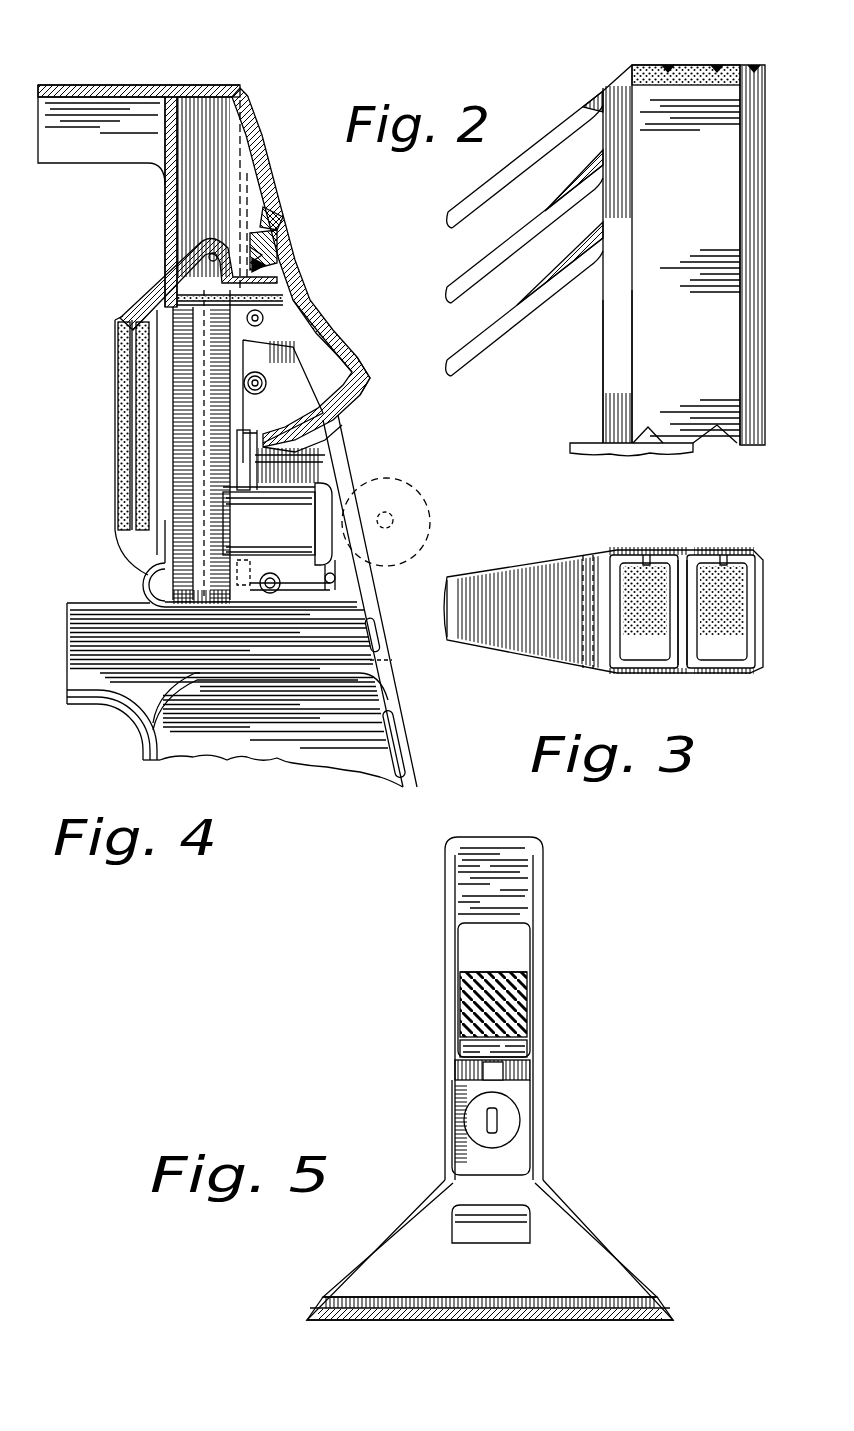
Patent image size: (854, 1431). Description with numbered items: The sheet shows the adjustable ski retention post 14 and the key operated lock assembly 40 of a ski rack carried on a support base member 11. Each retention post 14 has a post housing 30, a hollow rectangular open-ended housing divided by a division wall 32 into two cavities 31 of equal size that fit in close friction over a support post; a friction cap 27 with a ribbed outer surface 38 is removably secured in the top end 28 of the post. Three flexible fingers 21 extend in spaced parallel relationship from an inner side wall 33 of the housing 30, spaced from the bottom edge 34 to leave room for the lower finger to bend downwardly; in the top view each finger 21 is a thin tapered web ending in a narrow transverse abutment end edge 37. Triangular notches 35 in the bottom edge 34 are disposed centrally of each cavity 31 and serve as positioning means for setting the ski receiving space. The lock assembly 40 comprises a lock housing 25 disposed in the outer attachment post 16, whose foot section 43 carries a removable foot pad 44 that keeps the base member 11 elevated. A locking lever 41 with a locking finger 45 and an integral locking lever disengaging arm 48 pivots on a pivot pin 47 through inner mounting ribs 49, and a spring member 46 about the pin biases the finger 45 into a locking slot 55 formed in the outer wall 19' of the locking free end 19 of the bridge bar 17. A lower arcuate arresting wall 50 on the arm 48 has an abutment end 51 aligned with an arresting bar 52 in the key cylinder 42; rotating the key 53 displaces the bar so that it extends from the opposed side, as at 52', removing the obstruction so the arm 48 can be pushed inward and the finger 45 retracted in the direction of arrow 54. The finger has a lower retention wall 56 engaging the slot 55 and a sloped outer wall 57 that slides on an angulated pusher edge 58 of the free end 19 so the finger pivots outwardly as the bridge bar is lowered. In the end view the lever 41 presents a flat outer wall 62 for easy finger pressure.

In FIG. 4, the support base member 11 is at (97, 700).
In FIG. 2, the adjustable ski retention post 14 is at (570, 100).
In FIG. 4, the attachment post 16 is at (193, 513).
In FIG. 4, the bridge bar 17 is at (137, 92).
In FIG. 5, the bridge bar 17 is at (493, 833).
In FIG. 4, the locking free end 19 is at (220, 325).
In FIG. 5, the locking free end 19 is at (490, 1072).
In FIG. 4, the outer wall 19' is at (301, 261).
In FIG. 2, the flexible finger 21 is at (475, 195).
In FIG. 3, the flexible finger 21 is at (510, 590).
In FIG. 4, the lock housing 25 is at (320, 453).
In FIG. 2, the friction cap 27 is at (697, 67).
In FIG. 3, the top end 28 is at (623, 567).
In FIG. 2, the post housing 30 is at (643, 333).
In FIG. 3, the cavity 31 is at (703, 583).
In FIG. 3, the division wall 32 is at (683, 633).
In FIG. 2, the inner side wall 33 is at (603, 290).
In FIG. 2, the bottom edge 34 is at (623, 457).
In FIG. 2, the triangular notch 35 is at (707, 423).
In FIG. 3, the transverse abutment end edge 37 is at (443, 617).
In FIG. 2, the ribbed outer surface 38 is at (647, 63).
In FIG. 4, the key operated lock assembly 40 is at (372, 405).
In FIG. 4, the locking lever 41 is at (353, 353).
In FIG. 5, the locking lever 41 is at (520, 1027).
In FIG. 4, the key cylinder 42 is at (323, 540).
In FIG. 5, the key cylinder 42 is at (507, 1130).
In FIG. 4, the foot section 43 is at (150, 747).
In FIG. 5, the foot pad 44 is at (673, 1320).
In FIG. 4, the locking finger 45 is at (270, 227).
In FIG. 5, the locking finger 45 is at (513, 947).
In FIG. 4, the spring member 46 is at (297, 323).
In FIG. 4, the pivot pin 47 is at (263, 315).
In FIG. 4, the locking lever disengaging arm 48 is at (363, 370).
In FIG. 5, the locking lever disengaging arm 48 is at (530, 997).
In FIG. 4, the inner mounting rib 49 is at (277, 335).
In FIG. 4, the arcuate arresting wall 50 is at (337, 417).
In FIG. 4, the abutment end 51 is at (257, 443).
In FIG. 4, the arresting bar 52 is at (160, 460).
In FIG. 4, the arresting bar extended position 52' is at (207, 576).
In FIG. 4, the key 53 is at (405, 540).
In FIG. 4, the arrow 54 is at (297, 227).
In FIG. 4, the locking slot 55 is at (273, 210).
In FIG. 4, the lower retention wall 56 is at (237, 247).
In FIG. 4, the sloped outer wall 57 is at (250, 230).
In FIG. 4, the angulated pusher edge 58 is at (270, 263).
In FIG. 5, the flat outer wall 62 is at (467, 987).